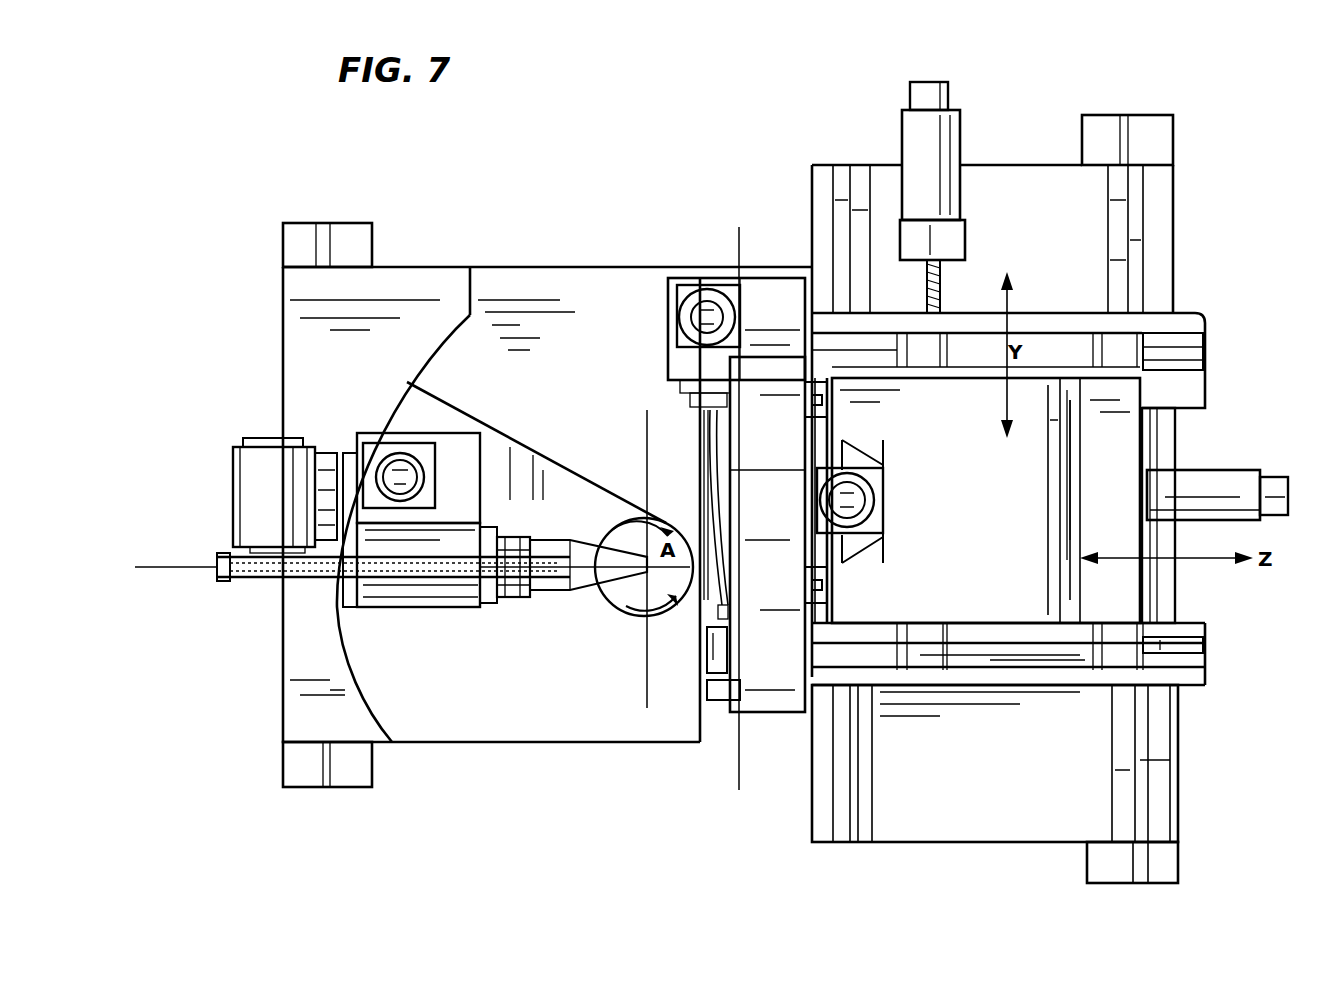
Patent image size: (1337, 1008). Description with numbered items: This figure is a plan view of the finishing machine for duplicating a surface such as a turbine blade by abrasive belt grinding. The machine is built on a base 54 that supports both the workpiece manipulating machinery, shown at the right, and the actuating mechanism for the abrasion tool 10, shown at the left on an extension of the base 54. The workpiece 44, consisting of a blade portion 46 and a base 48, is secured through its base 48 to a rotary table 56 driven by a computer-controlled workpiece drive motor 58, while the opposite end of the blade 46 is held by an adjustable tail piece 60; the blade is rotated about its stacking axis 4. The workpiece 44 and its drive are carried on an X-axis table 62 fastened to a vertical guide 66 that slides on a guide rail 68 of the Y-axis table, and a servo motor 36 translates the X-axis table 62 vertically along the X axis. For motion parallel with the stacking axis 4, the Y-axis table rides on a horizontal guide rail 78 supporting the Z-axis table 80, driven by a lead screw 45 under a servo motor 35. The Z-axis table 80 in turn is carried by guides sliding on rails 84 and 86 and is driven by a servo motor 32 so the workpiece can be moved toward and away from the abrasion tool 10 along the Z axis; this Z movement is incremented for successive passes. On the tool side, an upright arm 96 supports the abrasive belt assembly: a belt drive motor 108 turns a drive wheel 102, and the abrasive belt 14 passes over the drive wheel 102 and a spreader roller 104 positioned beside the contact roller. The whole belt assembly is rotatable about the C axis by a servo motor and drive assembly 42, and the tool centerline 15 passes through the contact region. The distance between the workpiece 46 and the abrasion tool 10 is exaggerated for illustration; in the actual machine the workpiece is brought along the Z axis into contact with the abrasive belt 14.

The stacking axis 4 is at (742, 790).
The abrasion tool 10 is at (636, 590).
The abrasive belt 14 is at (405, 575).
The axis centerline 15 is at (165, 560).
The servo motor 32 is at (1230, 480).
The servo motor 35 is at (930, 130).
The servo motor 36 is at (885, 505).
The servo motor and drive assembly 42 is at (396, 468).
The workpiece 44 is at (712, 500).
The lead screw 45 is at (950, 283).
The blade portion 46 is at (700, 460).
The base 48 is at (726, 410).
The base 54 is at (1180, 748).
The rotary table 56 is at (770, 300).
The workpiece drive motor 58 is at (708, 300).
The adjustable tail piece 60 is at (705, 665).
The X-axis table 62 is at (782, 523).
The vertical guide 66 is at (805, 395).
The guide rail 68 is at (828, 590).
The horizontal guide rail 78 is at (1140, 190).
The Z-axis table 80 is at (1125, 445).
The rail 84 is at (1185, 345).
The rail 86 is at (1205, 645).
The upright arm 96 is at (440, 598).
The drive wheel 102 is at (220, 580).
The spreader roller 104 is at (515, 598).
The belt drive motor 108 is at (252, 490).